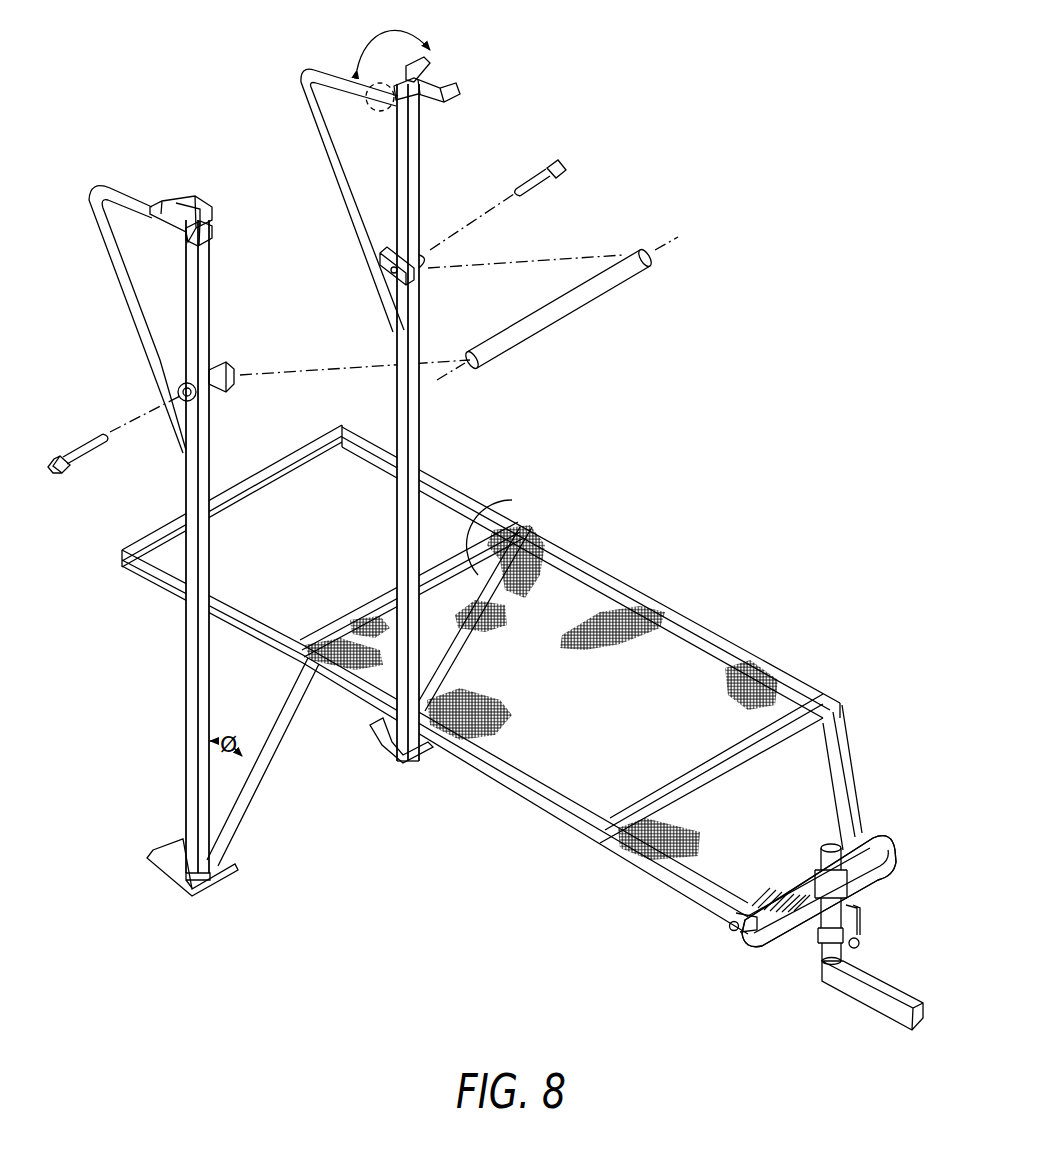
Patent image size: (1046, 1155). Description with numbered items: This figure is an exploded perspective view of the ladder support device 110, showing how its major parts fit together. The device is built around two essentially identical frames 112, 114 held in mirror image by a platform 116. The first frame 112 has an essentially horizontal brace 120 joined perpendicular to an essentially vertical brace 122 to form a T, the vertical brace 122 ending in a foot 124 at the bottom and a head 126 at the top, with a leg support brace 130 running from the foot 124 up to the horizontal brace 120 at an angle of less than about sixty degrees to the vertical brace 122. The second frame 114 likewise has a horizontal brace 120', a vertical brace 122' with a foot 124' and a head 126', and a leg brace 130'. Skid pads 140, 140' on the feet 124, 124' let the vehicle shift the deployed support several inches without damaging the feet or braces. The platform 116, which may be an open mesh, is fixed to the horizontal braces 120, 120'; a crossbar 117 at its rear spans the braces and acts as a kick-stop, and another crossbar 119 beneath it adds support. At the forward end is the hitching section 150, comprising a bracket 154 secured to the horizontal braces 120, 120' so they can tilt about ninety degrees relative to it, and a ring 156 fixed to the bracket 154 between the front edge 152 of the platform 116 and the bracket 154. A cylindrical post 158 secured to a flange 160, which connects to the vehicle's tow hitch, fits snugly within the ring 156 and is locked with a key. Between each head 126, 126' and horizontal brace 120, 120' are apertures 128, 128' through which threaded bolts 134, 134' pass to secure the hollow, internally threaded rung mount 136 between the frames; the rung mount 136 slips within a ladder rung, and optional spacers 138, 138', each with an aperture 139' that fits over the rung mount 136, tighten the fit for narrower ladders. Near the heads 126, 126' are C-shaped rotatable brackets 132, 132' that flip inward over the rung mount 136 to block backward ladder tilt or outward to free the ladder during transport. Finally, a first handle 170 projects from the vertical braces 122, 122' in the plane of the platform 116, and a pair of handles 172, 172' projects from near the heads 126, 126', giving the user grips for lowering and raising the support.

The ladder support device 110 is at (680, 204).
The first frame 112 is at (213, 271).
The second frame 114 is at (437, 163).
The platform 116 is at (542, 562).
The crossbar 117 is at (348, 616).
The crossbar 119 is at (684, 778).
The horizontal brace 120 is at (435, 742).
The horizontal brace 120' is at (591, 572).
The vertical brace 122 is at (165, 546).
The vertical brace 122' is at (458, 422).
The foot 124 is at (185, 914).
The foot 124' is at (441, 782).
The head 126 is at (231, 202).
The head 126' is at (377, 121).
The aperture 128 is at (223, 412).
The aperture 128' is at (521, 289).
The leg support brace 130 is at (276, 762).
The leg brace 130' is at (518, 523).
The rotatable bracket 132 is at (181, 187).
The rotatable bracket 132' is at (466, 69).
The threaded bolt 134 is at (114, 432).
The threaded bolt 134' is at (530, 205).
The rung mount 136 is at (643, 268).
The spacer 138 is at (339, 363).
The spacer 138' is at (357, 271).
The aperture 139' is at (362, 307).
The skid pad 140 is at (165, 876).
The skid pad 140' is at (390, 771).
The hitching section 150 is at (875, 810).
The front edge 152 is at (742, 932).
The bracket 154 is at (867, 890).
The ring 156 is at (802, 908).
The cylindrical post 158 is at (834, 957).
The flange 160 is at (881, 1012).
The first handle 170 is at (160, 582).
The handle 172 is at (124, 300).
The handle 172' is at (331, 181).